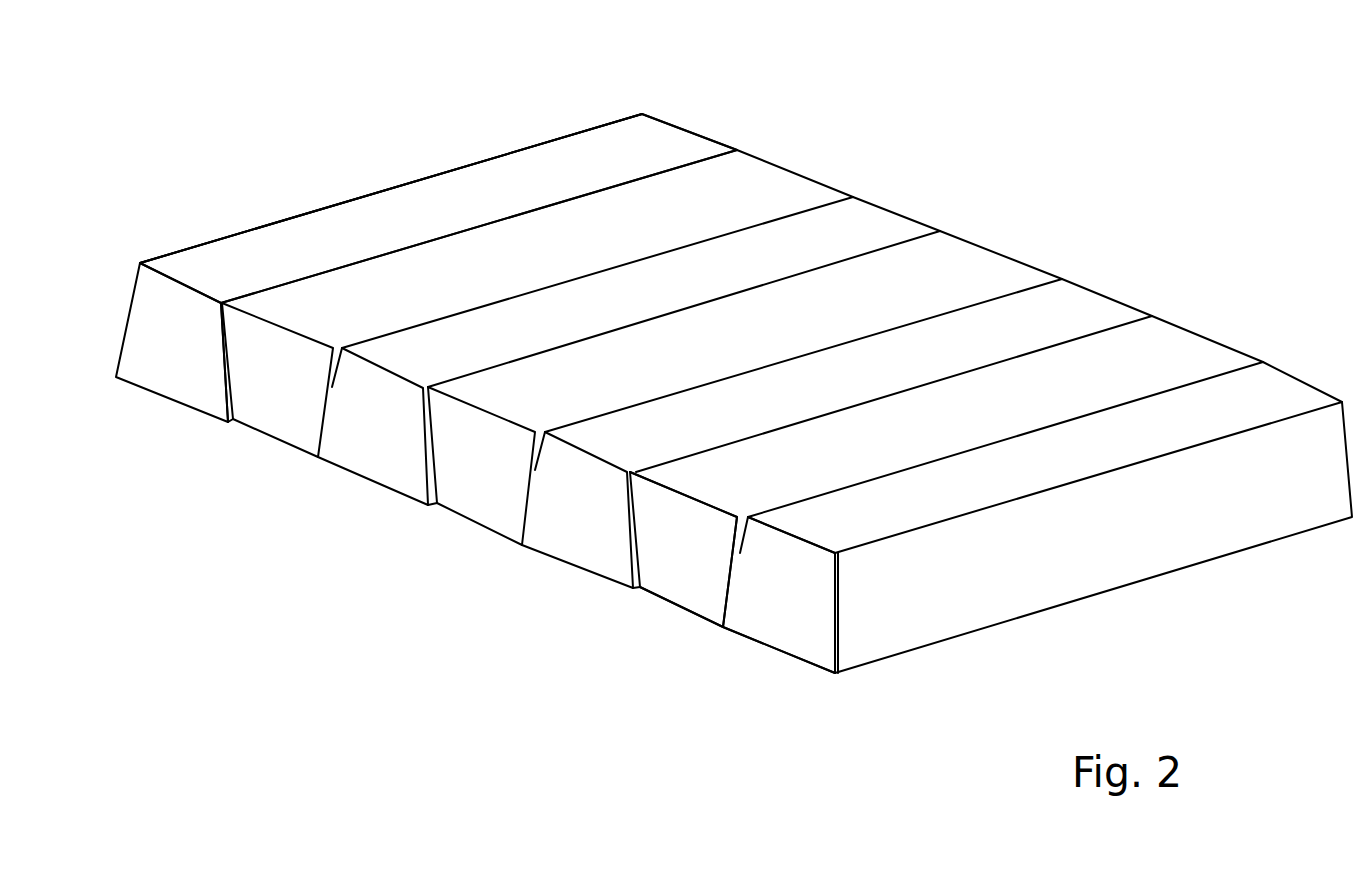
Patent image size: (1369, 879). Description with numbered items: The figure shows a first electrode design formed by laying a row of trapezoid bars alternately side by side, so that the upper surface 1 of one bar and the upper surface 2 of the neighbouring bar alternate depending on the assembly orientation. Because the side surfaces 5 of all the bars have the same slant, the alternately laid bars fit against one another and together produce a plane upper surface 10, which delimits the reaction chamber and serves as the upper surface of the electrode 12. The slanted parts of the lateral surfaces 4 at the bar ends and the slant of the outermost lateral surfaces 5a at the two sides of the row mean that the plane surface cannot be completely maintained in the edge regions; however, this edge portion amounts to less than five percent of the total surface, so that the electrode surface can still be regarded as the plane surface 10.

The upper surface 1 is at (568, 150).
The upper surface 2 is at (750, 188).
The lateral surface 4 is at (686, 570).
The side surface 5 is at (227, 407).
The outermost lateral surface 5a is at (338, 205).
The plane upper surface 10 is at (455, 203).
The electrode 12 is at (734, 413).